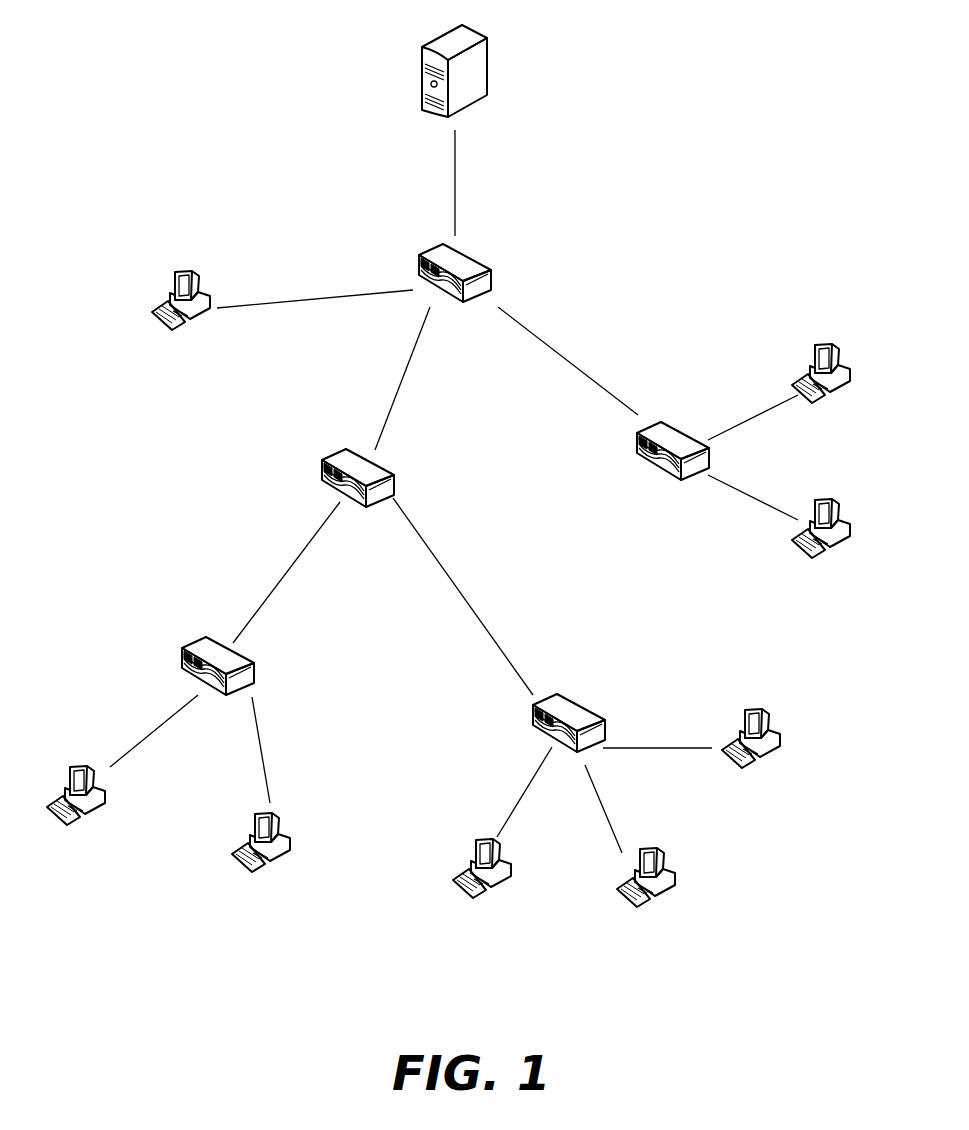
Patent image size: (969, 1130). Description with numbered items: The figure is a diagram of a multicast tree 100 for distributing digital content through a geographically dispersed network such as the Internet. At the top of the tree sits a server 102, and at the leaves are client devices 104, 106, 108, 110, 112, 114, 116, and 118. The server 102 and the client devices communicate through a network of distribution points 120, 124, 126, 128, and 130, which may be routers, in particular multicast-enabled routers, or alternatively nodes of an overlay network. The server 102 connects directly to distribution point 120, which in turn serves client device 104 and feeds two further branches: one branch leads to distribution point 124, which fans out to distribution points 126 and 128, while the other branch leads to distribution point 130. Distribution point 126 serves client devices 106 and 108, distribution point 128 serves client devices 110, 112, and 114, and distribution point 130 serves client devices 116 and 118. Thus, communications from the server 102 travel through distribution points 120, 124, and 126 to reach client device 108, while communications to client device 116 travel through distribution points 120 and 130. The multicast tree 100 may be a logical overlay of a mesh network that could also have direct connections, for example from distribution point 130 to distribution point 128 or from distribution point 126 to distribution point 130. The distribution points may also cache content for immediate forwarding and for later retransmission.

The multicast tree 100 is at (712, 128).
The server 102 is at (480, 33).
The client device 104 is at (193, 273).
The client device 106 is at (73, 765).
The client device 108 is at (273, 818).
The client device 110 is at (497, 850).
The client device 112 is at (660, 857).
The client device 114 is at (765, 713).
The client device 116 is at (825, 497).
The client device 118 is at (820, 343).
The distribution point 120 is at (478, 263).
The distribution point 124 is at (377, 465).
The distribution point 126 is at (250, 662).
The distribution point 128 is at (582, 705).
The distribution point 130 is at (675, 422).